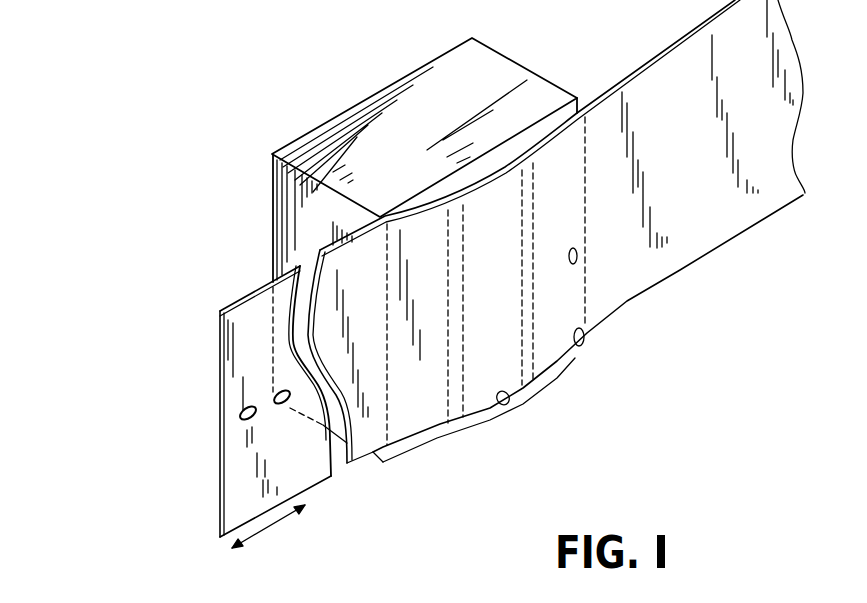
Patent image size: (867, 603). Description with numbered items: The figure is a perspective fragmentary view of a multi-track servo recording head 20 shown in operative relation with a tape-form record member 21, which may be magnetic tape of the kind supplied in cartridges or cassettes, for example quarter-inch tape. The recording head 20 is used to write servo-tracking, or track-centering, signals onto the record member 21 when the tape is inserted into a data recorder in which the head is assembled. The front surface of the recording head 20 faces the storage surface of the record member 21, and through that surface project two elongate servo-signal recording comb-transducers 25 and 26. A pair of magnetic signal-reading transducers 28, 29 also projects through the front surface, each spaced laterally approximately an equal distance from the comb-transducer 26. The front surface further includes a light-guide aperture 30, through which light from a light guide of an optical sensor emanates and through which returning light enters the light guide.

The multi-track servo recording head 20 is at (374, 150).
The tape-form record member 21 is at (248, 316).
The servo-signal recording comb-transducer 25 is at (455, 388).
The servo-signal recording comb-transducer 26 is at (528, 335).
The magnetic signal-reading transducer 28 is at (578, 257).
The magnetic signal-reading transducer 29 is at (587, 345).
The light-guide aperture 30 is at (510, 401).